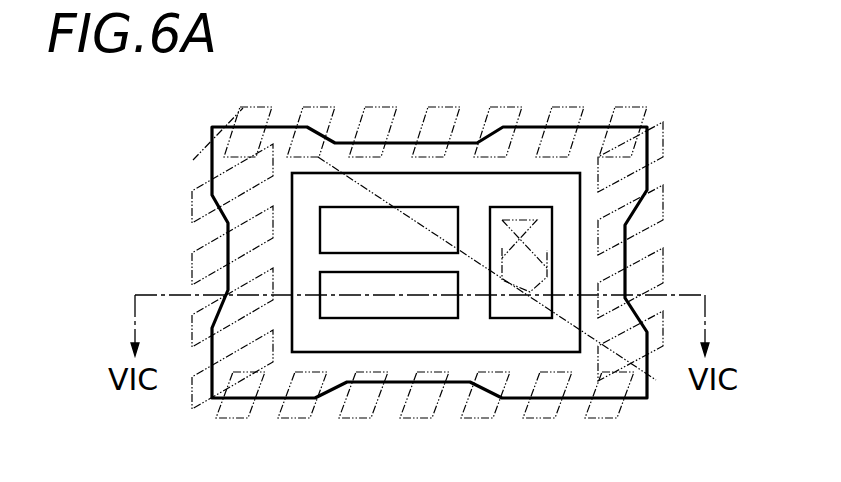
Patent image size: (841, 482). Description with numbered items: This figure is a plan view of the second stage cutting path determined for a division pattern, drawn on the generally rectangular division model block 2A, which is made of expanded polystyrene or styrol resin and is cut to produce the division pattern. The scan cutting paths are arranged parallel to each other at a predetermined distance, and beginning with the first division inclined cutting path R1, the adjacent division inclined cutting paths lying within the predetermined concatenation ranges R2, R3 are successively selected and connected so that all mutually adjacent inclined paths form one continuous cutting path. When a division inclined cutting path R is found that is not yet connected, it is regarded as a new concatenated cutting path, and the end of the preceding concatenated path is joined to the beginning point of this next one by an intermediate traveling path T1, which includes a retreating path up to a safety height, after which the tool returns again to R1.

The division model block 2A is at (648, 163).
The intermediate traveling path T1 is at (383, 173).
The division inclined cutting path R is at (376, 238).
The first division inclined cutting path R1 is at (238, 108).
The concatenation range R2 is at (207, 180).
The concatenation range R3 is at (207, 210).